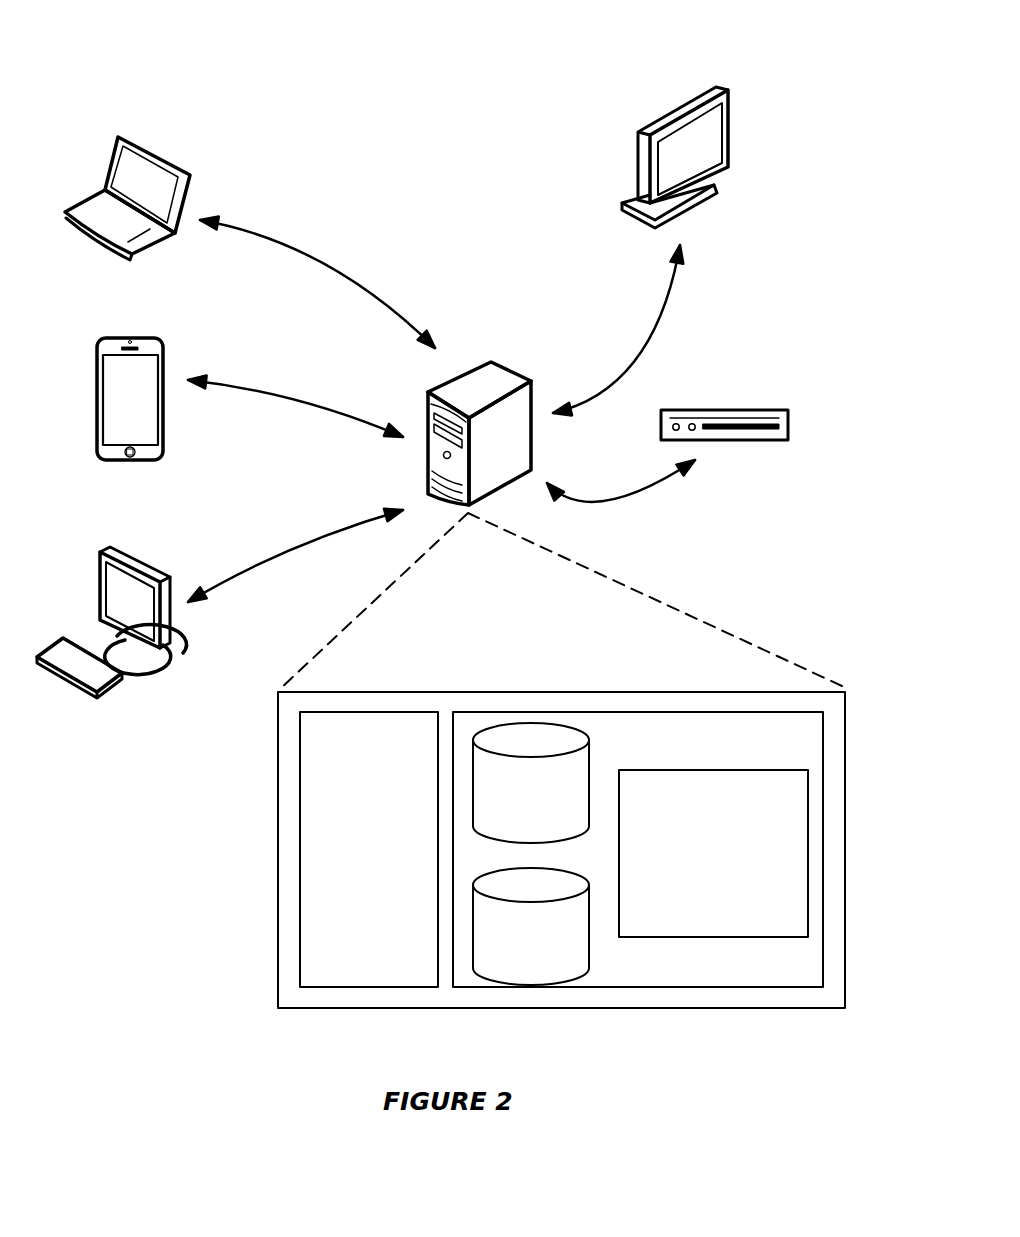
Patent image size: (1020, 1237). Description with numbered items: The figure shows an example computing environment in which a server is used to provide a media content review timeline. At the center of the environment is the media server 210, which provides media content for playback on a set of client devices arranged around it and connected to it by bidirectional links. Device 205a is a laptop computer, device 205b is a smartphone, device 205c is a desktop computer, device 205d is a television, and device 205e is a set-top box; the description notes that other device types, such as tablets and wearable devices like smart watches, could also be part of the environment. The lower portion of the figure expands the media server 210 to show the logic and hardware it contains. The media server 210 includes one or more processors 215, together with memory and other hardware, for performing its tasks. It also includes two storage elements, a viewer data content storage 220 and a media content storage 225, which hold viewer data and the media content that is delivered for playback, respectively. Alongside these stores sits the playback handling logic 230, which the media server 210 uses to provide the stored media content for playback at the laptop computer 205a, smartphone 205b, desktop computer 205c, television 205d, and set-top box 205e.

The laptop computer 205a is at (152, 152).
The smartphone 205b is at (130, 335).
The desktop computer 205c is at (140, 560).
The television 205d is at (693, 88).
The set-top box 205e is at (755, 410).
The media server 210 is at (515, 368).
The processors 215 is at (369, 849).
The viewer data content storage 220 is at (531, 783).
The media content storage 225 is at (531, 926).
The playback handling logic 230 is at (713, 853).